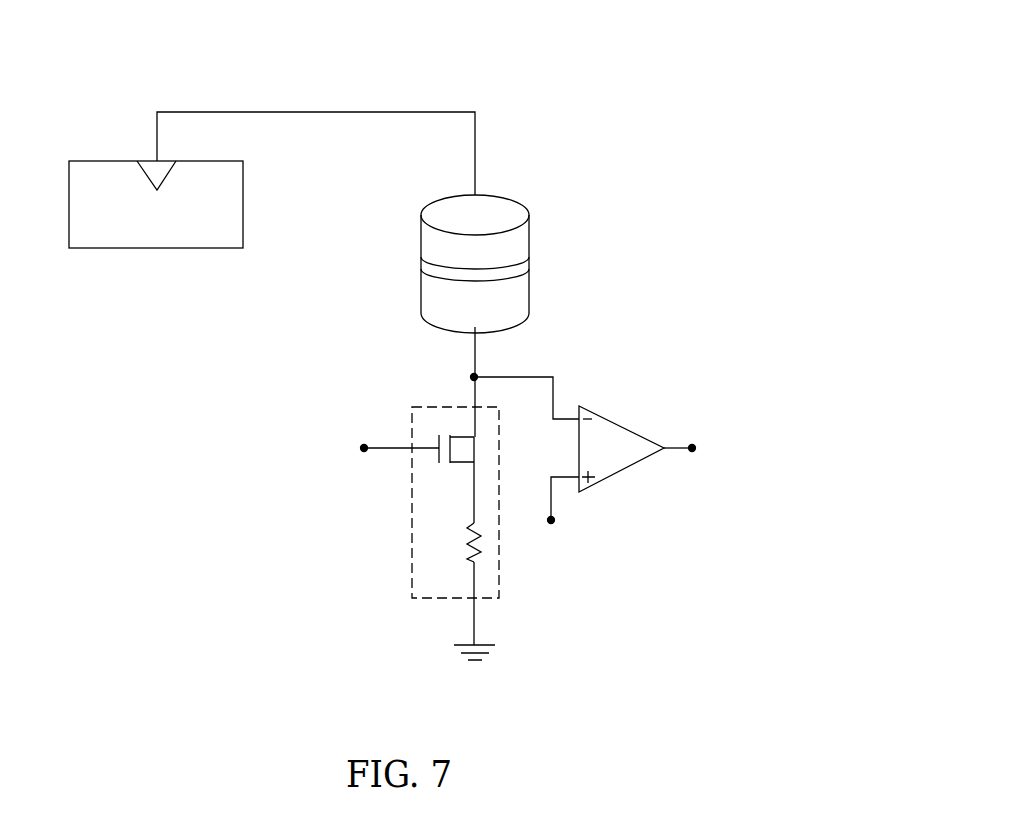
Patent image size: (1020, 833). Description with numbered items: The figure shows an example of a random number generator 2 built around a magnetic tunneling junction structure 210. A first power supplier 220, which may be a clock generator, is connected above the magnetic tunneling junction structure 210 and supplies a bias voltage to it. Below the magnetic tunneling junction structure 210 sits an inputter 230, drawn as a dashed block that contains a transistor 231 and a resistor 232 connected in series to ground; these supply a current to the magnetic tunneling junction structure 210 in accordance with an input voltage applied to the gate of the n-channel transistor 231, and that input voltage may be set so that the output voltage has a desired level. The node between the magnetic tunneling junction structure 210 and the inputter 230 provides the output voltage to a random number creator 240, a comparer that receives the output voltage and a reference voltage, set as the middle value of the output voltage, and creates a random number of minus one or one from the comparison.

The random number generator 2 is at (527, 50).
The magnetic tunneling junction structure 210 is at (708, 265).
The first power supplier 220 is at (157, 249).
The inputter 230 is at (412, 546).
The transistor 231 is at (437, 437).
The resistor 232 is at (467, 530).
The random number creator 240 is at (623, 426).